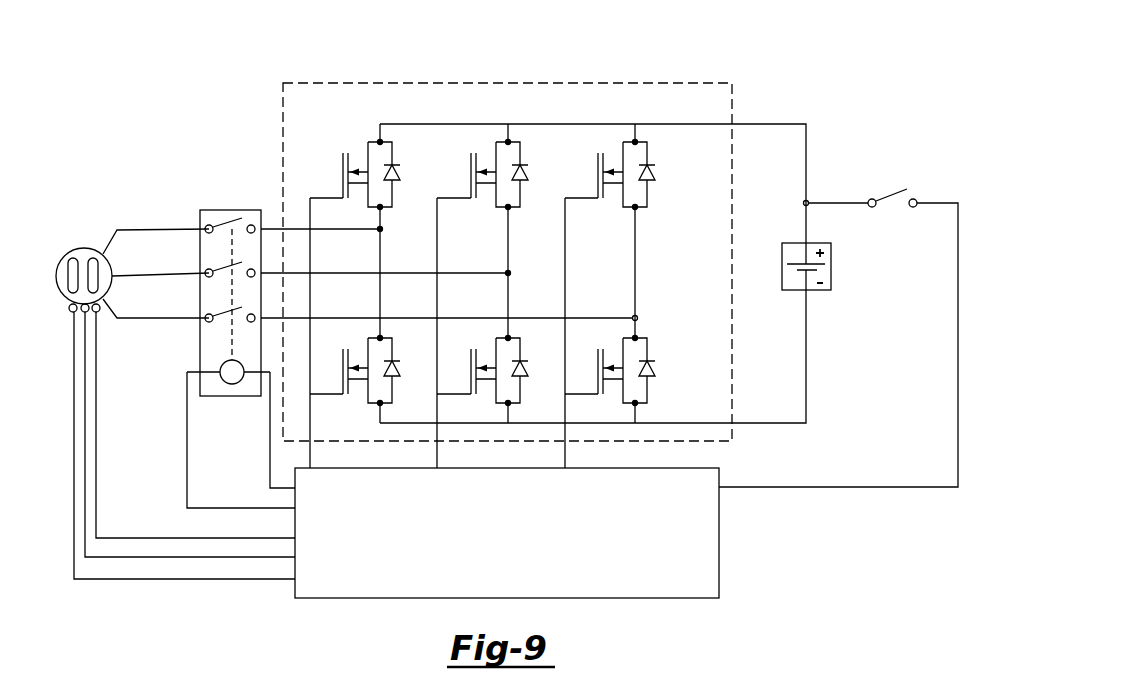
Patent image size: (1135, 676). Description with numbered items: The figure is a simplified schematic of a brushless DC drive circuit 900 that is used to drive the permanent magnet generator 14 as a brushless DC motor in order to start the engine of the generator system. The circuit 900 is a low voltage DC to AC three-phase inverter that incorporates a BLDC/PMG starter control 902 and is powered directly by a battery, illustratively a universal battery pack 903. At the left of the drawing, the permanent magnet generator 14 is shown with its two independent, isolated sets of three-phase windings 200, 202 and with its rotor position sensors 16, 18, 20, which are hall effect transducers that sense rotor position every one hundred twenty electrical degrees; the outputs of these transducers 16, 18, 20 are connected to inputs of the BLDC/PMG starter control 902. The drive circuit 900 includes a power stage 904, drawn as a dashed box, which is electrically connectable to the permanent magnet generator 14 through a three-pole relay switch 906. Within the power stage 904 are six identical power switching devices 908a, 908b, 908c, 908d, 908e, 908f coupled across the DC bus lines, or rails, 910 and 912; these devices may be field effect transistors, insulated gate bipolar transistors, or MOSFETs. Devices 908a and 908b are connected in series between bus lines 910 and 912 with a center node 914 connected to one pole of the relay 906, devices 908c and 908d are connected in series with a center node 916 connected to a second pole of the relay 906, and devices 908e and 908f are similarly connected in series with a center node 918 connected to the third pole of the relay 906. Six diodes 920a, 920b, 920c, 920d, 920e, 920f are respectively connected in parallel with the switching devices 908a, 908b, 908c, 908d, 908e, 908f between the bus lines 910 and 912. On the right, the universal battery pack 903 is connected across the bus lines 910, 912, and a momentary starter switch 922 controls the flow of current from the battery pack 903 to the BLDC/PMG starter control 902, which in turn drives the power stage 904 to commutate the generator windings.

The brushless DC drive circuit 900 is at (645, 52).
The permanent magnet generator 14 is at (112, 258).
The three-phase windings 200 is at (70, 258).
The three-phase windings 202 is at (92, 258).
The rotor position sensor 16 is at (72, 313).
The rotor position sensor 18 is at (87, 312).
The rotor position sensor 20 is at (100, 305).
The 3-pole relay switch 906 is at (230, 210).
The power stage 904 is at (348, 83).
The power switching device 908a is at (343, 173).
The power switching device 908b is at (343, 369).
The power switching device 908c is at (471, 173).
The power switching device 908d is at (471, 369).
The power switching device 908e is at (598, 173).
The power switching device 908f is at (598, 369).
The diode 920a is at (400, 169).
The diode 920b is at (400, 367).
The diode 920c is at (528, 169).
The diode 920d is at (528, 367).
The diode 920e is at (655, 169).
The diode 920f is at (655, 367).
The DC bus line 910 is at (773, 124).
The DC bus line 912 is at (777, 427).
The center node 914 is at (382, 230).
The center node 916 is at (508, 273).
The center node 918 is at (637, 318).
The universal battery pack 903 is at (831, 273).
The momentary starter switch 922 is at (887, 192).
The BLDC/PMG starter control 902 is at (720, 577).